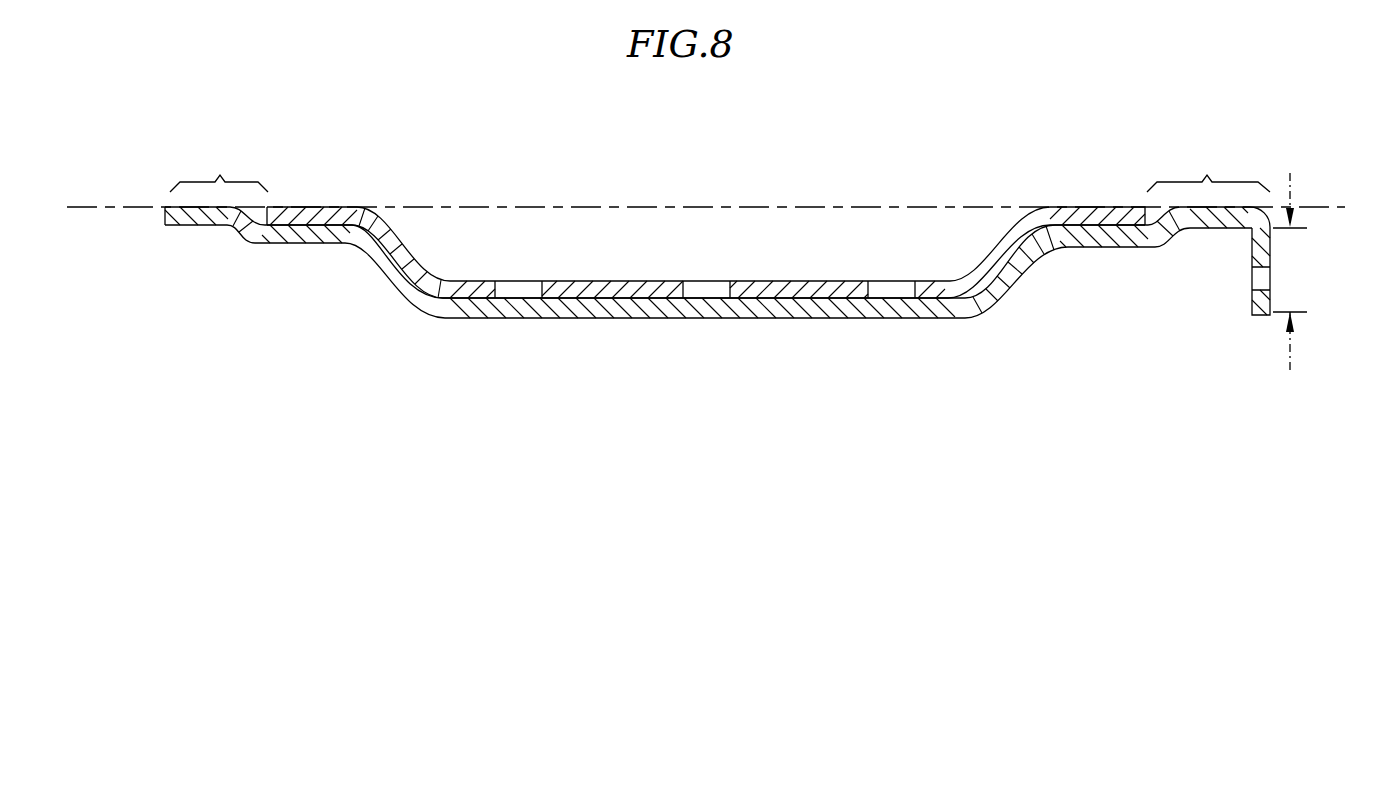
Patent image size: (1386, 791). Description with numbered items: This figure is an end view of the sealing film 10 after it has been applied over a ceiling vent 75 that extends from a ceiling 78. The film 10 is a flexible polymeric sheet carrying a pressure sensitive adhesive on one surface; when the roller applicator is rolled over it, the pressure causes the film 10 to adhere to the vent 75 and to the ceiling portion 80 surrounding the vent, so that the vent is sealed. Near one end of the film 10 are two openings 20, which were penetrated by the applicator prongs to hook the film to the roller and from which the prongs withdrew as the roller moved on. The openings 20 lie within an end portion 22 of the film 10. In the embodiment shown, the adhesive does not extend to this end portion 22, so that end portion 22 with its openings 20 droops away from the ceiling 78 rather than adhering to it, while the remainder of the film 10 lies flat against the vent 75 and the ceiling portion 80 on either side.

The sealing film 10 is at (888, 308).
The openings 20 is at (1262, 278).
The end portion 22 is at (1290, 352).
The ceiling vent 75 is at (400, 240).
The ceiling 78 is at (118, 206).
The ceiling portion 80 is at (220, 174).